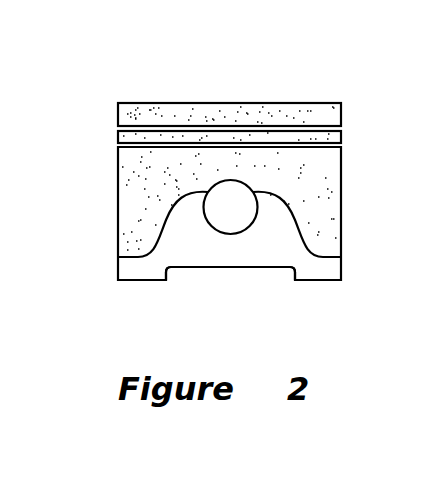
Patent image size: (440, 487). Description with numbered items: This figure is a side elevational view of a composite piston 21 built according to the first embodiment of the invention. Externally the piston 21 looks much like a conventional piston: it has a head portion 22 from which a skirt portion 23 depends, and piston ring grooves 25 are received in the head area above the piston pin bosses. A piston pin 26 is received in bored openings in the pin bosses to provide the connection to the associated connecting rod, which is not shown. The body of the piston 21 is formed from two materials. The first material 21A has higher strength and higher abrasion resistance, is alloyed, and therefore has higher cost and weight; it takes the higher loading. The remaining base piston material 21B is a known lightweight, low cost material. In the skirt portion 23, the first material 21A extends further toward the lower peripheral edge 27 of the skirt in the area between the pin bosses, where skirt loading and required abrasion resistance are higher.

The piston 21 is at (212, 71).
The first material 21A is at (325, 169).
The base piston material 21B is at (313, 260).
The head portion 22 is at (281, 103).
The skirt portion 23 is at (230, 231).
The piston ring grooves 25 is at (118, 143).
The piston pin 26 is at (238, 217).
The lower peripheral edge 27 is at (142, 280).